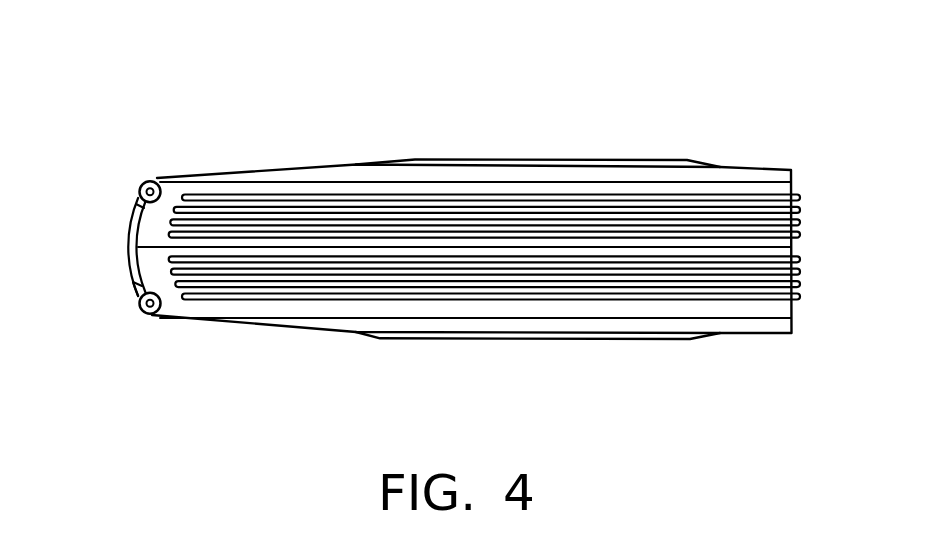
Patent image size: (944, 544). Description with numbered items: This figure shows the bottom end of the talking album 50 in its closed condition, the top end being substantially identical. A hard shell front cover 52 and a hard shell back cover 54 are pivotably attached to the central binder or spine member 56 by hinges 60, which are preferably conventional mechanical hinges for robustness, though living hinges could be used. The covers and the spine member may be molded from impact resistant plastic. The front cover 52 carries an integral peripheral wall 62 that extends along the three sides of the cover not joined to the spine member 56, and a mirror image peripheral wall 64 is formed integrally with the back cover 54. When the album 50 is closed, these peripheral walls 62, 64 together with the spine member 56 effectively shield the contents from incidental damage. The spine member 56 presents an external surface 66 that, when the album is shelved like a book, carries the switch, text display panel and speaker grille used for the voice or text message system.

The album 50 is at (158, 133).
The hard shell front cover 52 is at (730, 172).
The hard shell back cover 54 is at (730, 327).
The spine member 56 is at (131, 284).
The hinges 60 is at (150, 180).
The peripheral wall 62 is at (432, 223).
The peripheral wall 64 is at (432, 278).
The external surface 66 is at (127, 214).